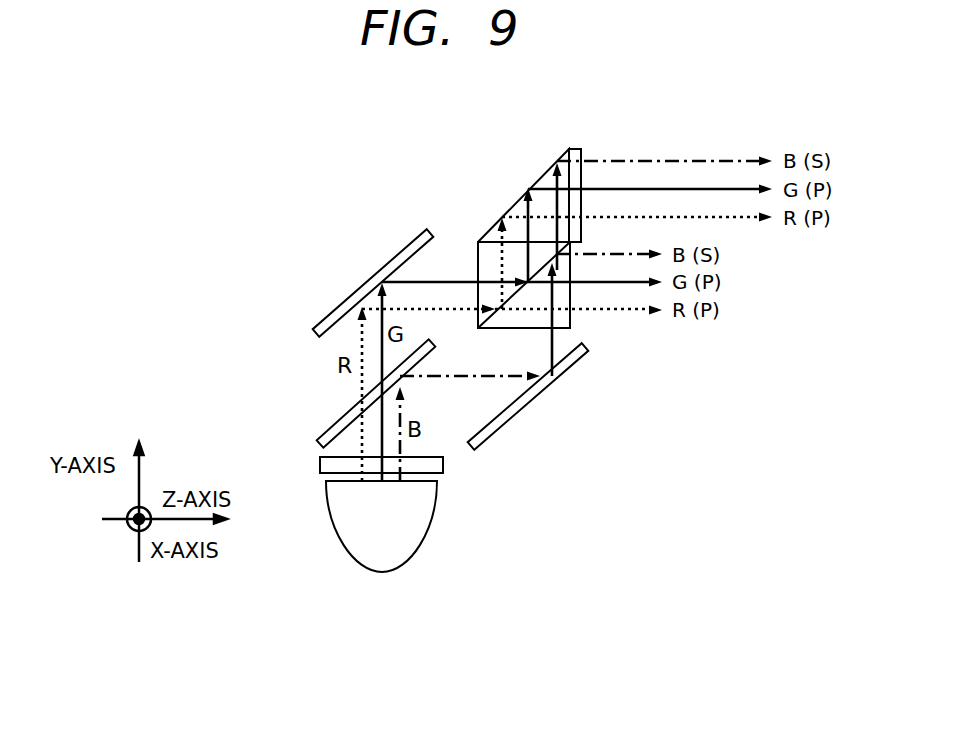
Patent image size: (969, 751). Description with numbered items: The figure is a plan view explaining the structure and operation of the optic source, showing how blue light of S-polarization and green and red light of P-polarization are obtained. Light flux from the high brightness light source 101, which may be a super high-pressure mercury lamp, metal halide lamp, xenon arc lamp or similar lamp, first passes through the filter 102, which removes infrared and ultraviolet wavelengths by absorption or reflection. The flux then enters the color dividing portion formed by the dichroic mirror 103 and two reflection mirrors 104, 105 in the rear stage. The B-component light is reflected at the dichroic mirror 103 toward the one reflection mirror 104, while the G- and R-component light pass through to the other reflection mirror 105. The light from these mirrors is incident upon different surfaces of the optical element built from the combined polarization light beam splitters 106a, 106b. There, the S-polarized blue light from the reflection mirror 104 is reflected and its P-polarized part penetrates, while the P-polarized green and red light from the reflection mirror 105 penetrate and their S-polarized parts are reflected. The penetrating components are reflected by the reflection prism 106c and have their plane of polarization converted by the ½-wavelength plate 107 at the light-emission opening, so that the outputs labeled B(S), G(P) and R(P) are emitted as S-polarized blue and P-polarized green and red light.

The high brightness light source 101 is at (423, 518).
The filter 102 is at (443, 465).
The dichroic mirror 103 is at (340, 420).
The reflection mirror 104 is at (516, 415).
The reflection mirror 105 is at (362, 288).
The polarization light beam splitter 106a is at (567, 317).
The polarization light beam splitter 106b is at (480, 267).
The reflection prism 106c is at (517, 208).
The ½-wavelength plate 107 is at (580, 148).